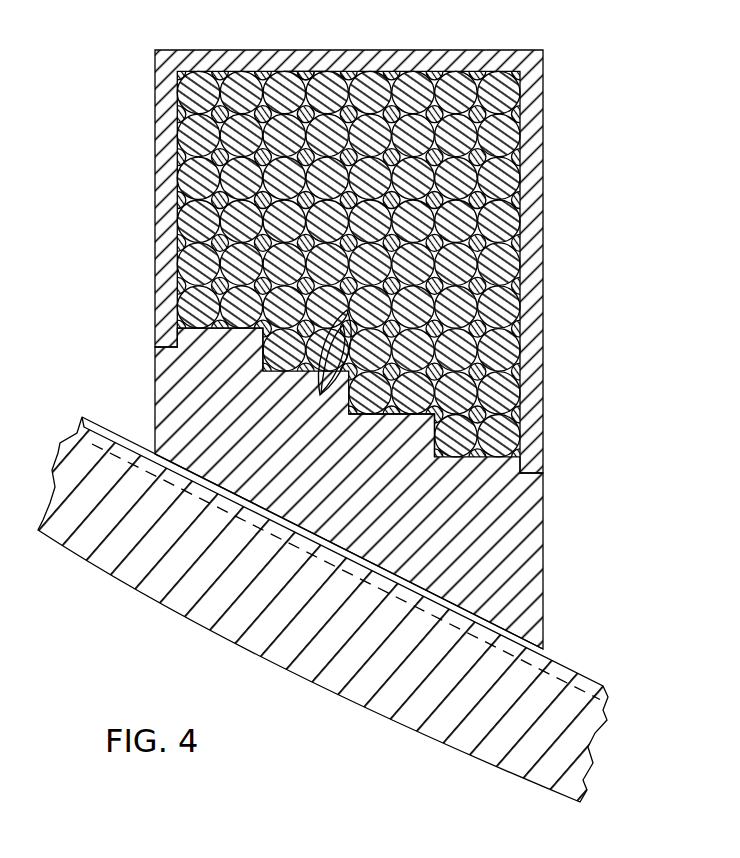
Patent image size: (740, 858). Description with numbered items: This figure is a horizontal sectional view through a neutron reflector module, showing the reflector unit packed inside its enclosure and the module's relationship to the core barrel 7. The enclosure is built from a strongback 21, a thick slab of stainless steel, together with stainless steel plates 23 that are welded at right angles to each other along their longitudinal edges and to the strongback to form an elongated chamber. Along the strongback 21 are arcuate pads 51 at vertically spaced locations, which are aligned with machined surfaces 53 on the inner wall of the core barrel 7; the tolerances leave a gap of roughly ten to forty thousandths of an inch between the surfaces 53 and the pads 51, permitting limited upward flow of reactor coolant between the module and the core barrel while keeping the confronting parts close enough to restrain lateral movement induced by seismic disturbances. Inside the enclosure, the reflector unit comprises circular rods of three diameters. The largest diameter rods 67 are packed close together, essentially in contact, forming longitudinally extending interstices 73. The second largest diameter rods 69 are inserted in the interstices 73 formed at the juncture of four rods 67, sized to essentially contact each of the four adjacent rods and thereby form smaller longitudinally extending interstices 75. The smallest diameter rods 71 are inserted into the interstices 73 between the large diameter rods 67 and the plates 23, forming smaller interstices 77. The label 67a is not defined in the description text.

The core barrel 7 is at (377, 700).
The strongback 21 is at (527, 533).
The stainless steel plates 23 is at (388, 60).
The arcuate pads 51 is at (353, 563).
The machined surfaces 53 is at (567, 680).
The largest diameter rods 67 is at (507, 183).
The small interstitial fibers 67a is at (222, 134).
The second largest diameter rods 69 is at (263, 350).
The smallest diameter rods 71 is at (292, 71).
The interstices 73 is at (423, 423).
The smaller interstices 75 is at (327, 390).
The smaller interstices 77 is at (298, 71).